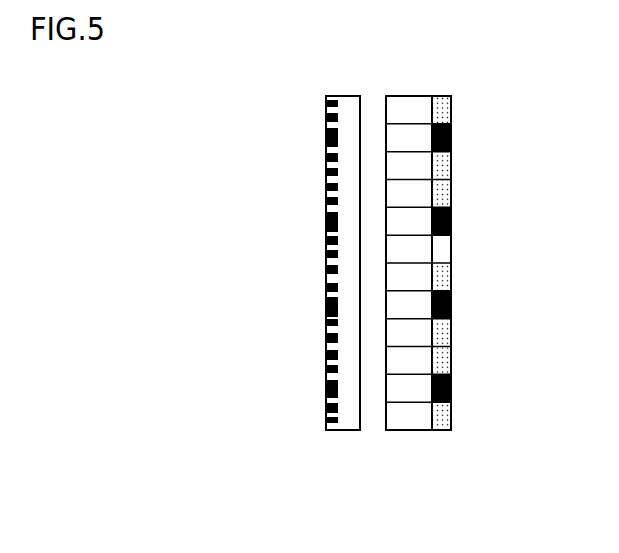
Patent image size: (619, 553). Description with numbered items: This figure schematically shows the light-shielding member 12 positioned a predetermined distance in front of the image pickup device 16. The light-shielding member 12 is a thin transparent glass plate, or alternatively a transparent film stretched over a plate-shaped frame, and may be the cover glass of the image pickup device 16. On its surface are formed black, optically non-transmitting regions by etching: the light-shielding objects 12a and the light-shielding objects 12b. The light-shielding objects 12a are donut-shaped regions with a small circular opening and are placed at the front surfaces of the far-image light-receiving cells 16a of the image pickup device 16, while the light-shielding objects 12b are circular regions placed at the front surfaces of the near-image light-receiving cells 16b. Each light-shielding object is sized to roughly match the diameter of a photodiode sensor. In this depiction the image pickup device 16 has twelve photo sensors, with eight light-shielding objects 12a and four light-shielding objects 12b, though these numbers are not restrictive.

The light-shielding member 12 is at (308, 97).
The light-shielding objects 12a is at (325, 201).
The light-shielding objects 12b is at (325, 135).
The image pickup device 16 is at (467, 98).
The far-image light-receiving cells 16a is at (452, 333).
The near-image light-receiving cells 16b is at (452, 389).